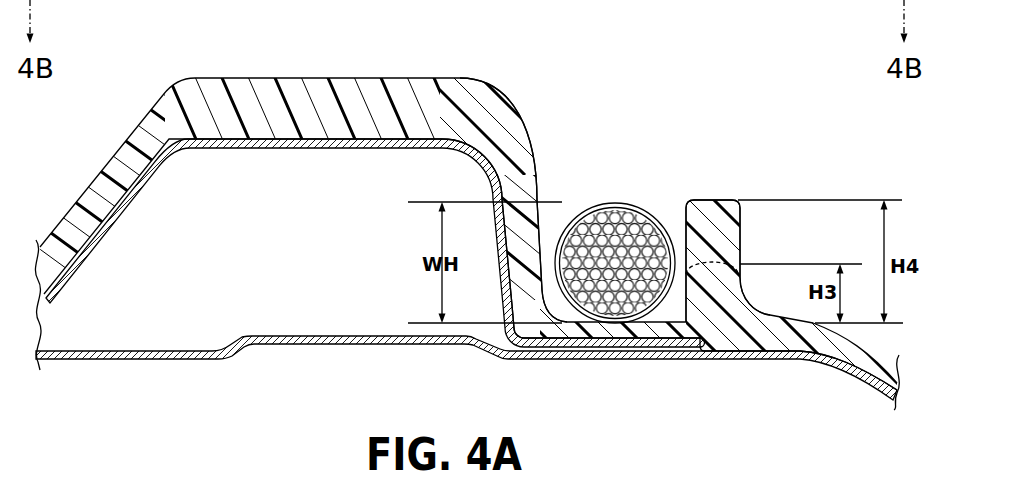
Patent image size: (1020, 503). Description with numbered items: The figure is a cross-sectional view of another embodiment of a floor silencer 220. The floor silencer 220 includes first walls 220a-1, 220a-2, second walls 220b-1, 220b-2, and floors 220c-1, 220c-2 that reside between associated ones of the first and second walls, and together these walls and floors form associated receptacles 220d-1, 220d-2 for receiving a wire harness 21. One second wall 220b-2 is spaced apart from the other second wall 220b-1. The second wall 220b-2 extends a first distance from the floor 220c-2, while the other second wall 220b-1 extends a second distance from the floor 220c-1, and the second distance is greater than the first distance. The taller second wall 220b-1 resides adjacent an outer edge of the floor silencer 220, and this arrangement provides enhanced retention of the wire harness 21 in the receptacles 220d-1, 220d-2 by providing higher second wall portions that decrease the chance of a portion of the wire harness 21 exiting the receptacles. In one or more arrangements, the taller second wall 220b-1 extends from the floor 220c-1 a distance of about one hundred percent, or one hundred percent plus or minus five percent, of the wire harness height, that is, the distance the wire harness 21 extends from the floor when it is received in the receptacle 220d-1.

The floor silencer 220 is at (362, 68).
The first wall 220a-1 is at (562, 200).
The first wall 220a-2 is at (533, 182).
The second wall 220b-1 is at (717, 200).
The second wall 220b-2 is at (720, 257).
The floor 220c-1 is at (466, 373).
The floor 220c-2 is at (618, 322).
The receptacle 220d-1 is at (375, 276).
The receptacle 220d-2 is at (560, 306).
The wire harness 21 is at (622, 202).